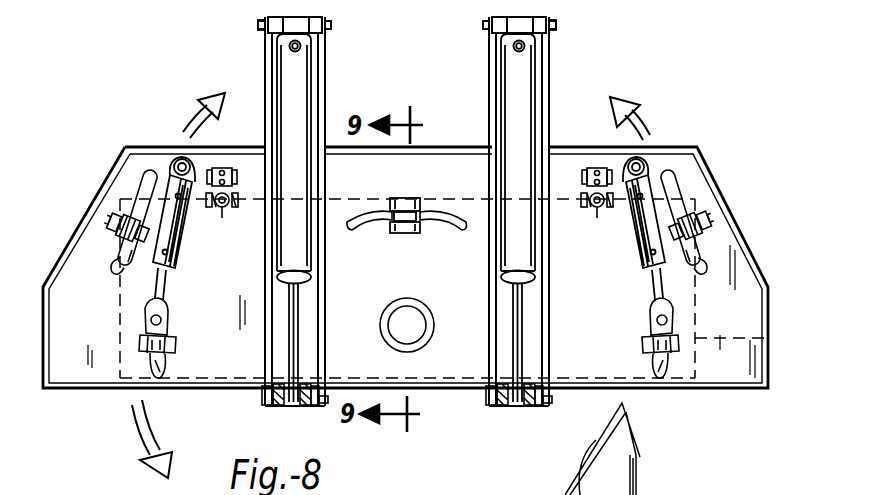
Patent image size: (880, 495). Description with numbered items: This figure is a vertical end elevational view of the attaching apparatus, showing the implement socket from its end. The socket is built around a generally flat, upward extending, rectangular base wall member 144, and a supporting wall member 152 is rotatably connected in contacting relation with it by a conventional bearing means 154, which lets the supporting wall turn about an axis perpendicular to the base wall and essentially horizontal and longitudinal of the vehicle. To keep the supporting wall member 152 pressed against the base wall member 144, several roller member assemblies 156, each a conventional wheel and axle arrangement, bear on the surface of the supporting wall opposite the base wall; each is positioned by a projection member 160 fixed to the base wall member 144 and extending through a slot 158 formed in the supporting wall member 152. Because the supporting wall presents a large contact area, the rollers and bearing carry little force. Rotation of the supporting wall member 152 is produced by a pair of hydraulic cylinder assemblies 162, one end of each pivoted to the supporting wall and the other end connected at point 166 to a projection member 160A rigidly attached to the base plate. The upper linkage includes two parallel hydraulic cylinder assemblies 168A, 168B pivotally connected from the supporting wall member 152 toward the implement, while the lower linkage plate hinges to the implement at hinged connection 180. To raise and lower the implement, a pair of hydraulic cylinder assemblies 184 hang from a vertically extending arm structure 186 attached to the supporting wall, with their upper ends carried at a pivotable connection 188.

The base wall member 144 is at (115, 312).
The supporting wall member 152 is at (362, 196).
The bearing means 154 is at (421, 337).
The roller member assembly 156 is at (410, 190).
The slot 158 is at (358, 226).
The projection member 160 is at (420, 222).
The projection member 160A is at (153, 362).
The hydraulic cylinder assembly 162 is at (177, 246).
The connection point 166 is at (672, 321).
The hydraulic cylinder assembly 168A is at (597, 218).
The hydraulic cylinder assembly 168B is at (222, 218).
The hinged connection 180 is at (268, 400).
The hydraulic cylinder assembly 184 is at (297, 115).
The arm structure 186 is at (265, 58).
The pivotable connection 188 is at (258, 25).